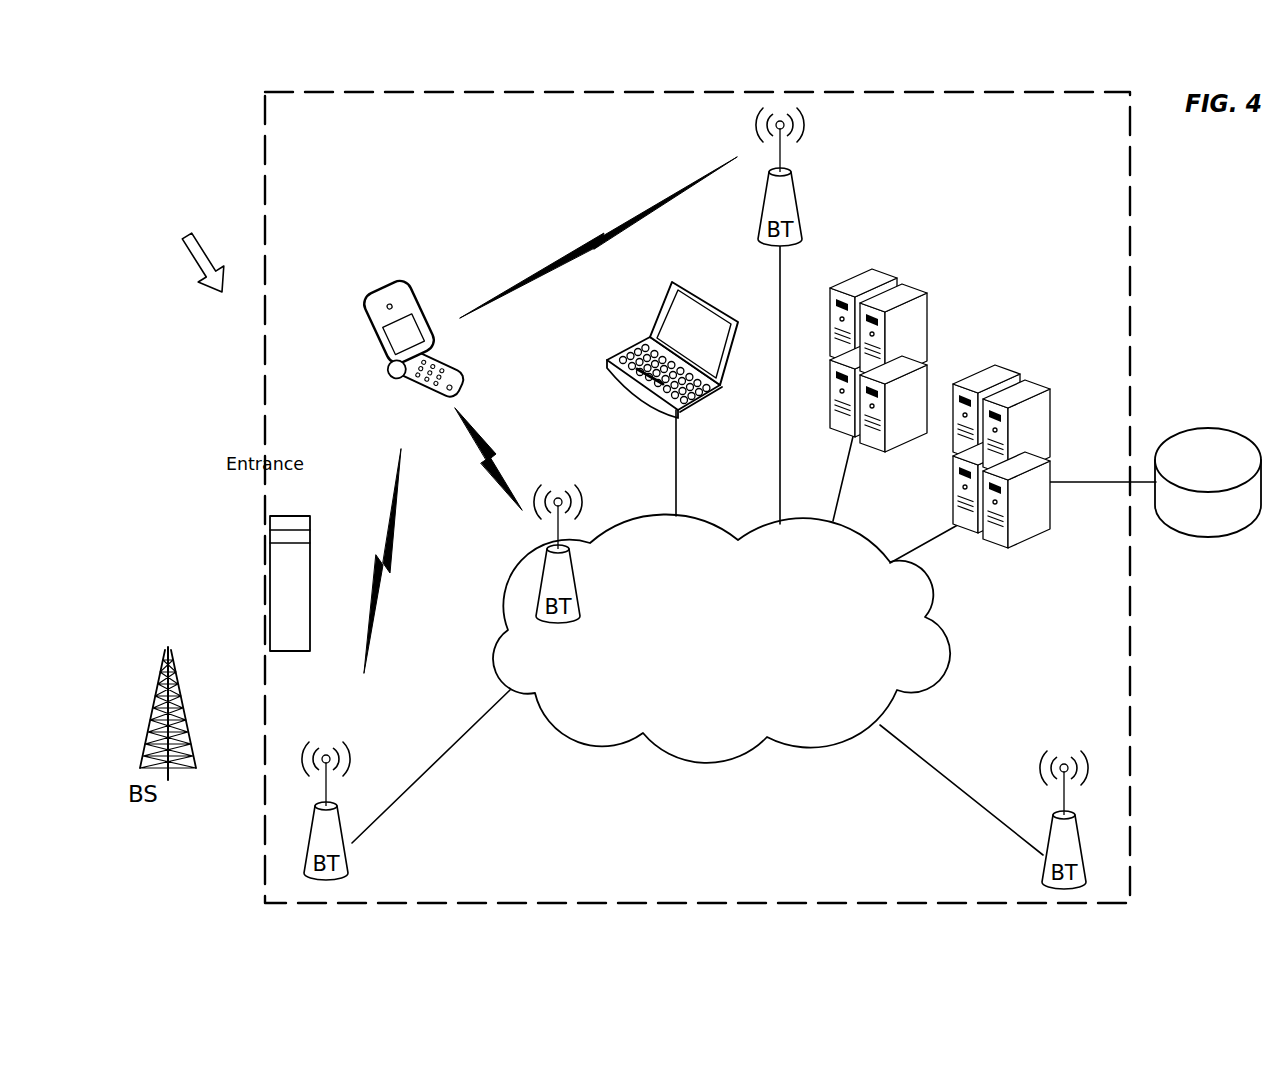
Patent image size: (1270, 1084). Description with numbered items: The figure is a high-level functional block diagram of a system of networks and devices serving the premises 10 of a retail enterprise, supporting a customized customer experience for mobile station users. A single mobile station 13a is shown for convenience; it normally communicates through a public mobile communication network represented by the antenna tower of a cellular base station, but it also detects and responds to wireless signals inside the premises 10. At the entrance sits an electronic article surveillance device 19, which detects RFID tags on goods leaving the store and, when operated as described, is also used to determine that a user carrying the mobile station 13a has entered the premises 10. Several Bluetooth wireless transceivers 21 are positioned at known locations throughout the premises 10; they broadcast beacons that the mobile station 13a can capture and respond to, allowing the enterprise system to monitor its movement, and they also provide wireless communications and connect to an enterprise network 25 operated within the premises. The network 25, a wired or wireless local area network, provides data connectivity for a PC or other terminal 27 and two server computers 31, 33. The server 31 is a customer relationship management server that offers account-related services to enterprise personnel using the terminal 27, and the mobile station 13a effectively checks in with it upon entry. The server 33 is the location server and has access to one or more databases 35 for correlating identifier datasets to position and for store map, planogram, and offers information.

The premises 10 is at (189, 253).
The mobile station 13a is at (355, 307).
The EAS device 19 is at (305, 591).
The BT wireless transceivers 21 is at (711, 498).
The enterprise network 25 is at (612, 521).
The terminal 27 is at (662, 282).
The server 31 is at (930, 310).
The server 33 is at (1050, 452).
The databases 35 is at (1180, 533).